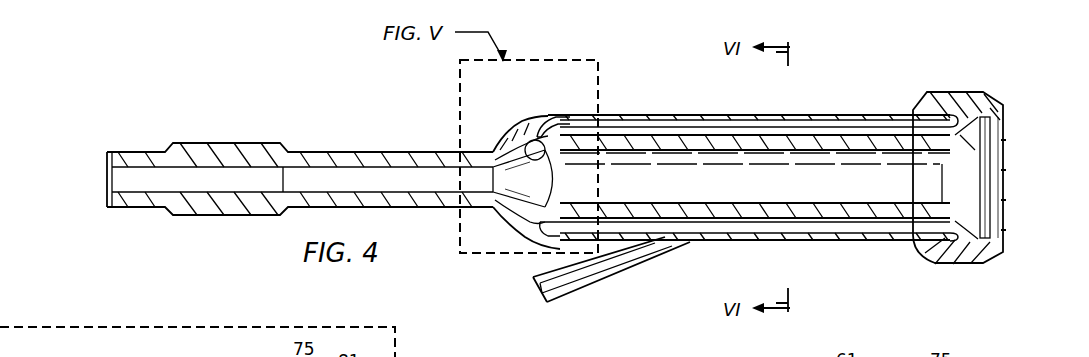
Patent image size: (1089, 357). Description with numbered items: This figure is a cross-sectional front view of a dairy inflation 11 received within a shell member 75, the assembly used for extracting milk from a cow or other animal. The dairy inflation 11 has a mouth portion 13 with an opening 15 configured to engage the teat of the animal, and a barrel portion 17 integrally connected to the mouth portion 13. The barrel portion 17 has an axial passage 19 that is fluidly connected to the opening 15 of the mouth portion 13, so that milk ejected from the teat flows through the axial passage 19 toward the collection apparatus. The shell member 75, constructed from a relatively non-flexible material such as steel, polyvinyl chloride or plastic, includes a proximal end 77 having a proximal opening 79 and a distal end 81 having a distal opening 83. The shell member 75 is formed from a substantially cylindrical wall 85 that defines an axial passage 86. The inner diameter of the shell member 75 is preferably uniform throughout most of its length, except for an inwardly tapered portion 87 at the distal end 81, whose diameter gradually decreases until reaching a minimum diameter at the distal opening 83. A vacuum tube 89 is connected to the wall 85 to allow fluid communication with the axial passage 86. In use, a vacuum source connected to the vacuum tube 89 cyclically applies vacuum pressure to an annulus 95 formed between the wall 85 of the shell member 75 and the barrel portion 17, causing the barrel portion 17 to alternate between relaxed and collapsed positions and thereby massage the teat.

The dairy inflation 11 is at (422, 130).
The mouth portion 13 is at (986, 100).
The opening 15 is at (1004, 182).
The barrel portion 17 is at (750, 240).
The axial passage 19 is at (722, 150).
The shell member 75 is at (877, 114).
The proximal end 77 is at (899, 241).
The proximal opening 79 is at (942, 162).
The distal end 81 is at (580, 116).
The distal opening 83 is at (526, 140).
The wall 85 is at (843, 241).
The axial passage 86 is at (845, 127).
The inwardly tapered portion 87 is at (548, 118).
The vacuum tube 89 is at (590, 286).
The annulus 95 is at (814, 228).